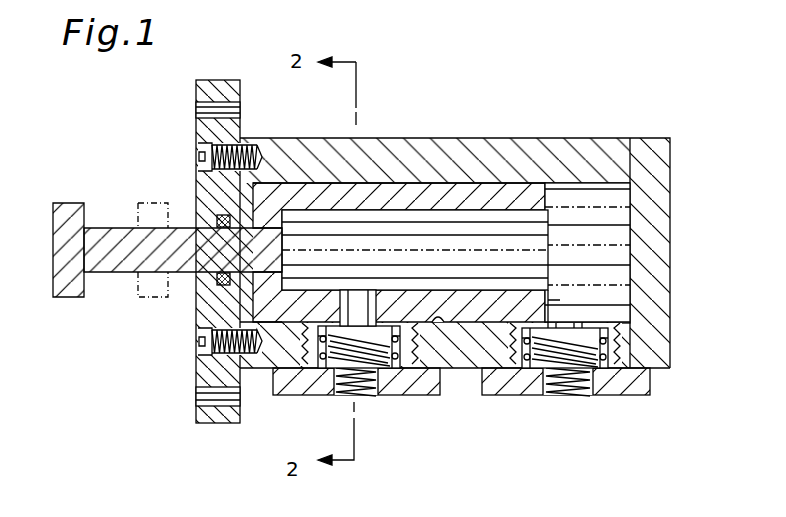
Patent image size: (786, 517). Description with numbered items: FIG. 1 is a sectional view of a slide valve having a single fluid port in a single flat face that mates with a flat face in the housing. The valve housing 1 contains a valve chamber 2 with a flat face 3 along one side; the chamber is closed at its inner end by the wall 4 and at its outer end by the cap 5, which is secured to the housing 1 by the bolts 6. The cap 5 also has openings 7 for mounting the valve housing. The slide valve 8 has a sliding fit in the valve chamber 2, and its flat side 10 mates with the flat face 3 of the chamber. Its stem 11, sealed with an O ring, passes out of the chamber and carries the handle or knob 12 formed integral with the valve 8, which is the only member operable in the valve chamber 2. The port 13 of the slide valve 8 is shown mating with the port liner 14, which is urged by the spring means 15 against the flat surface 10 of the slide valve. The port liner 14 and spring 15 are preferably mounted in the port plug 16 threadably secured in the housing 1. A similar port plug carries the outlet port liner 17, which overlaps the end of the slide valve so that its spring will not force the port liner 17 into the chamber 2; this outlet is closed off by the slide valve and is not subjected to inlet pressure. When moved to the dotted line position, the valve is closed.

The valve housing 1 is at (510, 150).
The valve chamber 2 is at (585, 207).
The flat face 3 is at (618, 335).
The wall 4 is at (672, 230).
The cap 5 is at (200, 198).
The bolts 6 is at (198, 162).
The openings 7 is at (210, 107).
The slide valve 8 is at (342, 202).
The flat side 10 is at (445, 325).
The stem 11 is at (128, 268).
The handle or knob 12 is at (62, 300).
The port 13 is at (360, 300).
The port liner 14 is at (326, 336).
The spring means 15 is at (322, 392).
The port plug 16 is at (278, 397).
The outlet port liner 17 is at (568, 400).